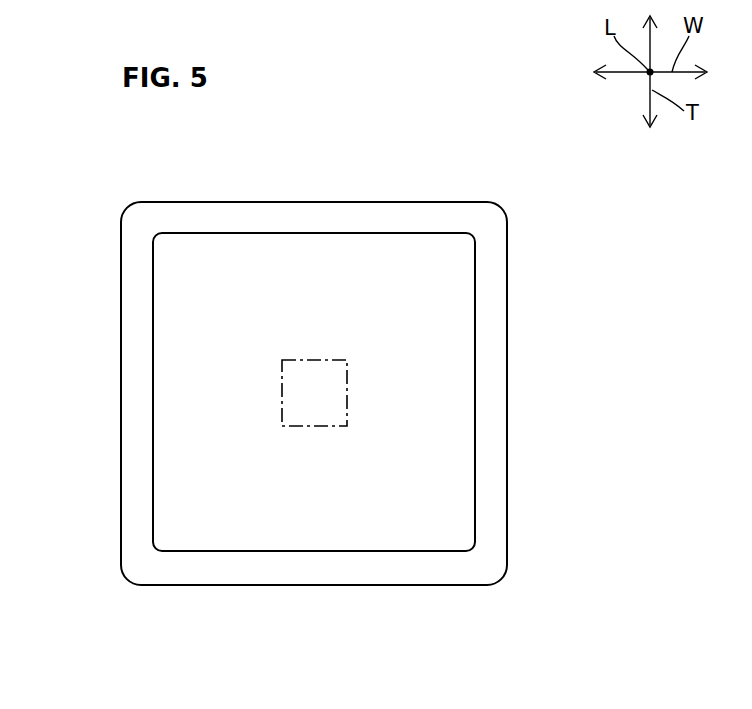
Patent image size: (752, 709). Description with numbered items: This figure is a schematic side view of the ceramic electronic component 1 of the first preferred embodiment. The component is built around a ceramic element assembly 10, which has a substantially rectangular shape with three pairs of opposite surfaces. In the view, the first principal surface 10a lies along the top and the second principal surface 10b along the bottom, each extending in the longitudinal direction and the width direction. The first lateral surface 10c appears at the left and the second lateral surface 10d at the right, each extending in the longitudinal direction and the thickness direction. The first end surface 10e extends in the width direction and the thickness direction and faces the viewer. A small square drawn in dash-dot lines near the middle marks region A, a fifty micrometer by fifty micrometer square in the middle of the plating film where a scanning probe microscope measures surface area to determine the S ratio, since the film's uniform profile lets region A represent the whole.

The ceramic electronic component 1 is at (445, 160).
The ceramic element assembly 10 is at (355, 198).
The first principal surface 10a is at (285, 202).
The second principal surface 10b is at (305, 585).
The first lateral surface 10c is at (121, 390).
The second lateral surface 10d is at (507, 377).
The first end surface 10e is at (498, 458).
The region A is at (348, 390).